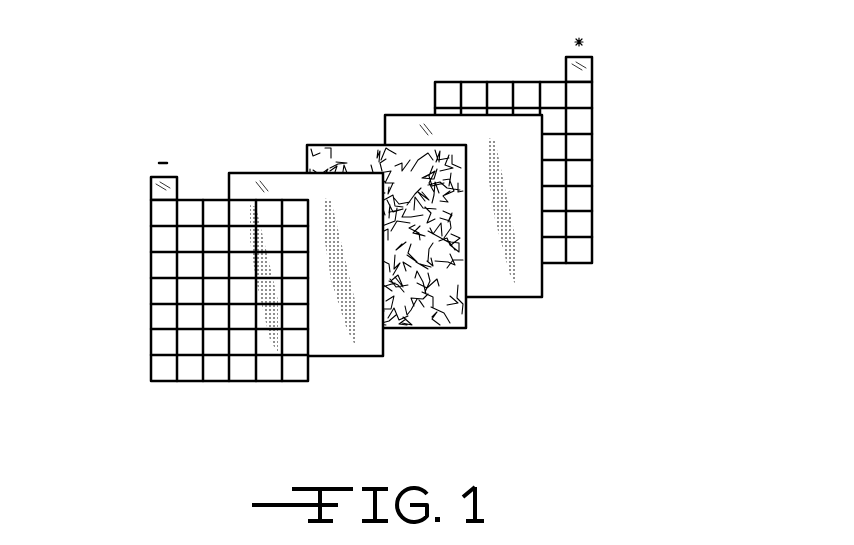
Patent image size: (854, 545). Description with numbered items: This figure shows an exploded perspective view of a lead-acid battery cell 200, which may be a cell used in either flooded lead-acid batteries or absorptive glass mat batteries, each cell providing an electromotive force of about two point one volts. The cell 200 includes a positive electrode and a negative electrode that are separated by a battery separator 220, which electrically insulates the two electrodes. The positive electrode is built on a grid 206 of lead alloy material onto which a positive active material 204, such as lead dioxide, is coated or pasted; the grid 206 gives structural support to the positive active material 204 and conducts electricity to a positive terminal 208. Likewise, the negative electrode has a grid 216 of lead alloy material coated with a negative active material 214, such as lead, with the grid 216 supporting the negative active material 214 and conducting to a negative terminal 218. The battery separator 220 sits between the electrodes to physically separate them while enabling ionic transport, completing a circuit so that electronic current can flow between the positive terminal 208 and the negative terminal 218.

The lead-acid battery cell 200 is at (633, 97).
The positive active material 204 is at (540, 288).
The grid 206 is at (554, 153).
The positive terminal 208 is at (566, 66).
The negative active material 214 is at (345, 356).
The grid 216 is at (170, 305).
The negative terminal 218 is at (151, 190).
The battery separator 220 is at (423, 328).